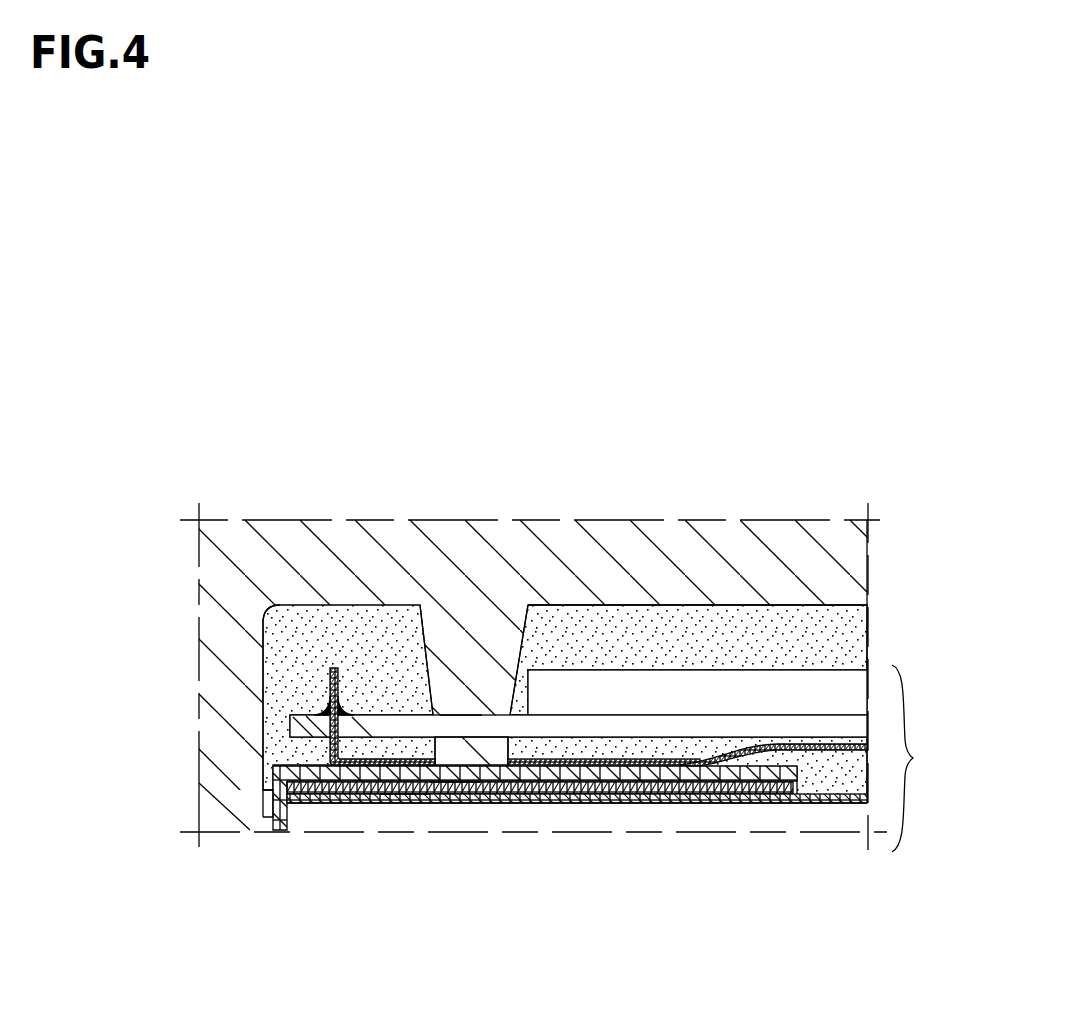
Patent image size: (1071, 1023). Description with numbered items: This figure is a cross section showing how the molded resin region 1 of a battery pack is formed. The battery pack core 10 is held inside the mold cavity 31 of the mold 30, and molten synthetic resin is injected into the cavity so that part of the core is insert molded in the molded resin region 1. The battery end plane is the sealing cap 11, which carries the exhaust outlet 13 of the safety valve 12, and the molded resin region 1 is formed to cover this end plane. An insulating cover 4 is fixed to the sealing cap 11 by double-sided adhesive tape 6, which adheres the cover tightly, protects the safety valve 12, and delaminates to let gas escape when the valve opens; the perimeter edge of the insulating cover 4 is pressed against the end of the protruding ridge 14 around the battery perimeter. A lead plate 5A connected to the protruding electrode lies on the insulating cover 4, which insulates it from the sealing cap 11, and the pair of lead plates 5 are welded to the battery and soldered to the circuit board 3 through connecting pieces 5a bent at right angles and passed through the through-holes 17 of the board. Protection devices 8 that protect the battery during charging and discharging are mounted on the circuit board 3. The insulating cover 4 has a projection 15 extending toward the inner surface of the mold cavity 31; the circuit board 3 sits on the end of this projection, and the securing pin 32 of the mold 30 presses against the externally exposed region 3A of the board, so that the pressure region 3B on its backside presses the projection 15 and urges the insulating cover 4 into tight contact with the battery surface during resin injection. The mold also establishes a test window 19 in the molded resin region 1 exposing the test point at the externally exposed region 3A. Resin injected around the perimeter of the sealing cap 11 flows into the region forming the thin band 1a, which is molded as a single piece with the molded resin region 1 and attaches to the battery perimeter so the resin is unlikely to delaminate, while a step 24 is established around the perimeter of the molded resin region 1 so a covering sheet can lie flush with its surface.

The molded resin region 1 is at (817, 645).
The thin band 1a is at (268, 800).
The circuit board 3 is at (737, 730).
The externally exposed region 3A is at (461, 712).
The pressure region 3B is at (490, 778).
The insulating cover 4 is at (612, 805).
The lead plates 5 is at (563, 846).
The lead plate 5A is at (750, 803).
The connecting pieces 5a is at (330, 666).
The double-sided adhesive tape 6 is at (703, 803).
The protection devices 8 is at (697, 693).
The battery pack core 10 is at (921, 758).
The sealing cap 11 is at (358, 803).
The safety valve 12 is at (452, 800).
The exhaust outlet 13 is at (398, 797).
The protruding ridge 14 is at (268, 780).
The projection 15 is at (480, 748).
The through-holes 17 is at (322, 712).
The test window 19 is at (329, 662).
The step 24 is at (265, 794).
The mold 30 is at (680, 577).
The mold cavity 31 is at (569, 605).
The securing pin 32 is at (470, 650).